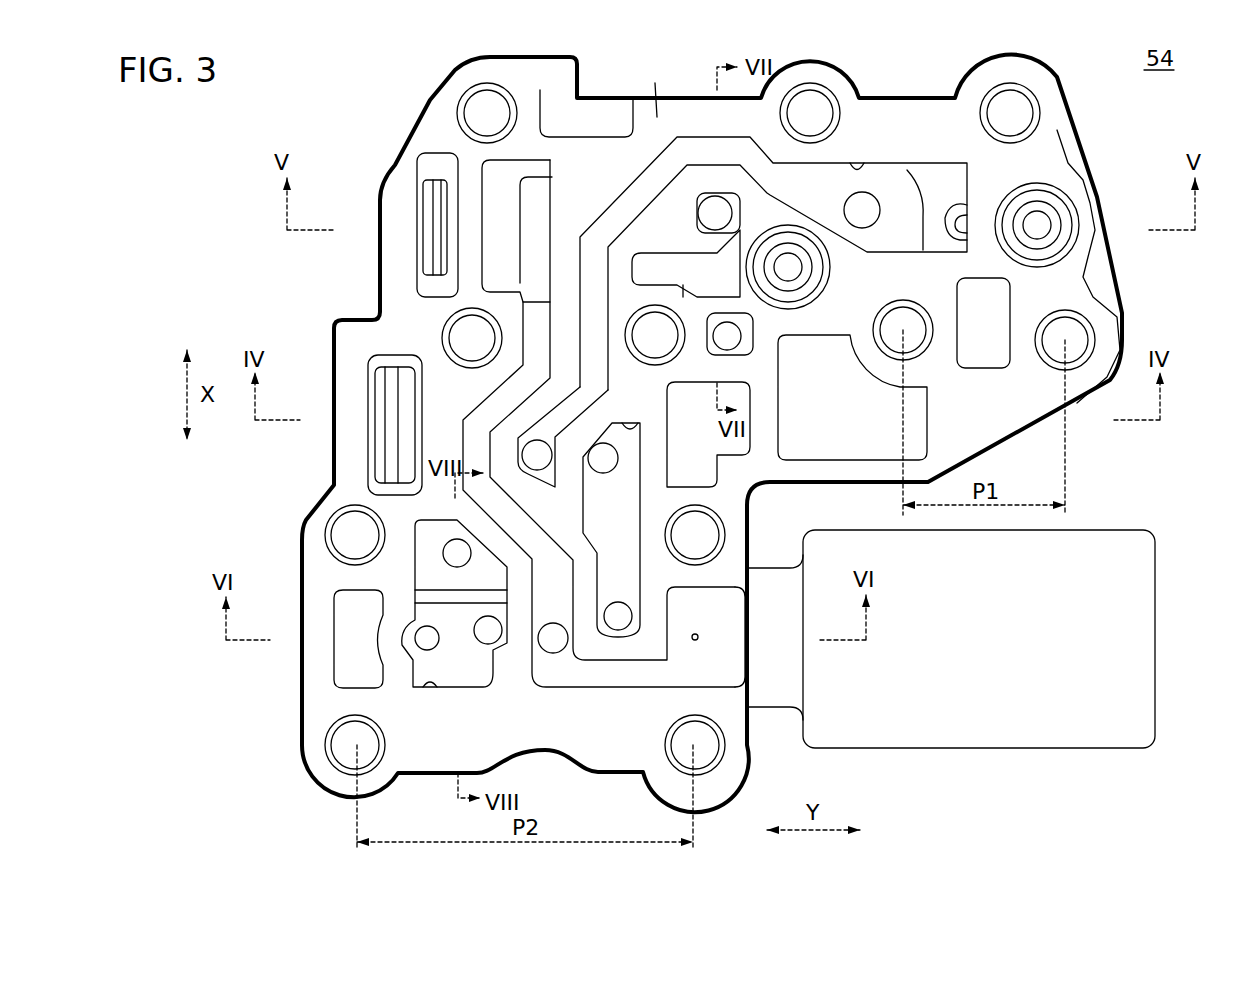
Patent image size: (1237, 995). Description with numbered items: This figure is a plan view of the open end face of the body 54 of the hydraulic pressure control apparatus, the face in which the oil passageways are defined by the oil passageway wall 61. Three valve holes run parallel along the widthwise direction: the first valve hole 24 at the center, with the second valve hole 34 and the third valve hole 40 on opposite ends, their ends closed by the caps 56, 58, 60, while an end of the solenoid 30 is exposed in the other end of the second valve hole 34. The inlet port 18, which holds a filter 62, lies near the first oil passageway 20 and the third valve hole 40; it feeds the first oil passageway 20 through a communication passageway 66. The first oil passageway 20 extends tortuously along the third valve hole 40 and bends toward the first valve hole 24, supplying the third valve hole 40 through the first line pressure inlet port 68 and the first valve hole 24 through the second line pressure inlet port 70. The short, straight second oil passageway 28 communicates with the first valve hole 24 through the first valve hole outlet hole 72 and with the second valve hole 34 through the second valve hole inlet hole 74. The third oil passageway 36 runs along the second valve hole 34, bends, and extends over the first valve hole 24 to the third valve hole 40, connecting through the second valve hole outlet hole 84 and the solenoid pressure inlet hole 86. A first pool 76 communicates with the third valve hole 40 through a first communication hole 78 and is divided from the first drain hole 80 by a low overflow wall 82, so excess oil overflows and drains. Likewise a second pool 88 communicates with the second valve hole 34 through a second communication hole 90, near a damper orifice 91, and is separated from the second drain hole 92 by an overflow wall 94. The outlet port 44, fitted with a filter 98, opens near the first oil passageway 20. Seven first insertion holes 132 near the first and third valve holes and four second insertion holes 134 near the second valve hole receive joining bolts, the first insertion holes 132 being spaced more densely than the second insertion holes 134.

The inlet port 18 is at (1020, 210).
The first oil passageway 20 is at (858, 163).
The first valve hole 24 is at (855, 460).
The second oil passageway 28 is at (630, 422).
The solenoid 30 is at (1155, 640).
The second valve hole 34 is at (345, 652).
The third oil passageway 36 is at (735, 655).
The third valve hole 40 is at (583, 147).
The outlet port 44 is at (818, 270).
The body 54 is at (712, 434).
The cap 56 is at (330, 445).
The cap 58 is at (302, 692).
The cap 60 is at (380, 247).
The oil passageway wall 61 is at (662, 88).
The filter 62 is at (1038, 245).
The communication passageway 66 is at (955, 218).
The first line pressure inlet port 68 is at (870, 212).
The second line pressure inlet port 70 is at (540, 456).
The first valve hole outlet hole 72 is at (600, 458).
The second valve hole inlet hole 74 is at (618, 602).
The first pool 76 is at (670, 240).
The first communication hole 78 is at (708, 207).
The first drain hole 80 is at (740, 347).
The overflow wall 82 is at (712, 292).
The second valve hole outlet hole 84 is at (553, 640).
The solenoid pressure inlet hole 86 is at (530, 205).
The second pool 88 is at (430, 688).
The second communication hole 90 is at (492, 640).
The damper orifice 91 is at (432, 648).
The second drain hole 92 is at (452, 565).
The overflow wall 94 is at (458, 600).
The filter 98 is at (788, 275).
The first insertion holes 132 is at (478, 108).
The second insertion holes 134 is at (340, 540).